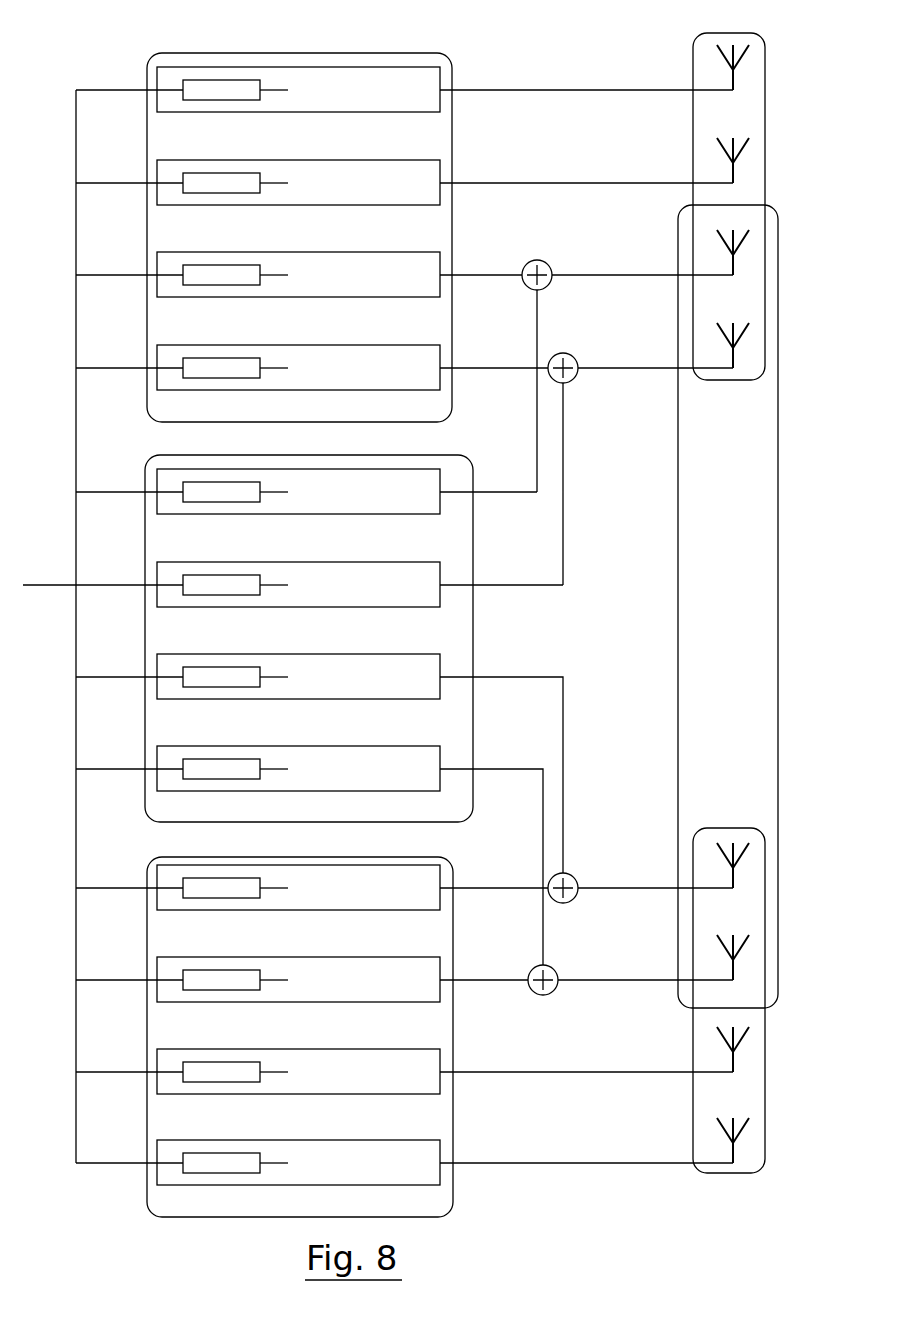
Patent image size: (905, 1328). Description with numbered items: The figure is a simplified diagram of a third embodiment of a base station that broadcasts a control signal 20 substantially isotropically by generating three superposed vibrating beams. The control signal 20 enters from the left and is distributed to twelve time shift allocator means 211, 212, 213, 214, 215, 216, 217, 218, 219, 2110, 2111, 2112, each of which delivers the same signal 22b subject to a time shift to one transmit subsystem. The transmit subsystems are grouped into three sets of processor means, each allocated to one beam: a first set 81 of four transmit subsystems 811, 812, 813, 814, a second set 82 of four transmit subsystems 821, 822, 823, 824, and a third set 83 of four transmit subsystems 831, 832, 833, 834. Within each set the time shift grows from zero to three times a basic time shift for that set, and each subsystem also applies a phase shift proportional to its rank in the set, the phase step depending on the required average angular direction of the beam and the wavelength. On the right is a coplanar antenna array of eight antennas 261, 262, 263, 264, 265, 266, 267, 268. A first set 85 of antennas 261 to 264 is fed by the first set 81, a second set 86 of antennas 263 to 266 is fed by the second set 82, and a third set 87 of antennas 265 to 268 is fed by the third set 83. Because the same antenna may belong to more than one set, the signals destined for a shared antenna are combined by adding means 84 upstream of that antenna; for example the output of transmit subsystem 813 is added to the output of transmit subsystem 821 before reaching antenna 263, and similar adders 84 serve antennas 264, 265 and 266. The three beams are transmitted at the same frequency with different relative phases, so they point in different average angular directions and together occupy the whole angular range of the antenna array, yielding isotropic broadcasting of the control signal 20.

The control signal 20 is at (48, 582).
The time shift allocator means 211 is at (190, 93).
The time shift allocator means 212 is at (190, 186).
The time shift allocator means 213 is at (190, 278).
The time shift allocator means 214 is at (190, 371).
The time shift allocator means 215 is at (190, 495).
The time shift allocator means 216 is at (190, 588).
The time shift allocator means 217 is at (190, 680).
The time shift allocator means 218 is at (190, 772).
The time shift allocator means 219 is at (190, 891).
The time shift allocator means 2110 is at (190, 983).
The time shift allocator means 2111 is at (190, 1075).
The time shift allocator means 2112 is at (190, 1166).
The time-shifted control signal 22b is at (270, 88).
The first set of transmit subsystems 81 is at (240, 53).
The second set of transmit subsystems 82 is at (147, 798).
The third set of transmit subsystems 83 is at (232, 1217).
The transmit subsystem 811 is at (397, 77).
The transmit subsystem 812 is at (408, 173).
The transmit subsystem 813 is at (408, 265).
The transmit subsystem 814 is at (408, 358).
The transmit subsystem 821 is at (397, 479).
The transmit subsystem 822 is at (408, 575).
The transmit subsystem 823 is at (408, 667).
The transmit subsystem 824 is at (408, 759).
The transmit subsystem 831 is at (397, 875).
The transmit subsystem 832 is at (408, 970).
The transmit subsystem 833 is at (408, 1062).
The transmit subsystem 834 is at (408, 1153).
The adding means 84 is at (548, 265).
The antenna 261 is at (725, 72).
The antenna 262 is at (728, 165).
The antenna 263 is at (728, 258).
The antenna 264 is at (730, 357).
The antenna 265 is at (728, 870).
The antenna 266 is at (728, 963).
The antenna 267 is at (728, 1053).
The antenna 268 is at (730, 1148).
The first set of antennas 85 is at (763, 140).
The second set of antennas 86 is at (776, 580).
The third set of antennas 87 is at (765, 937).